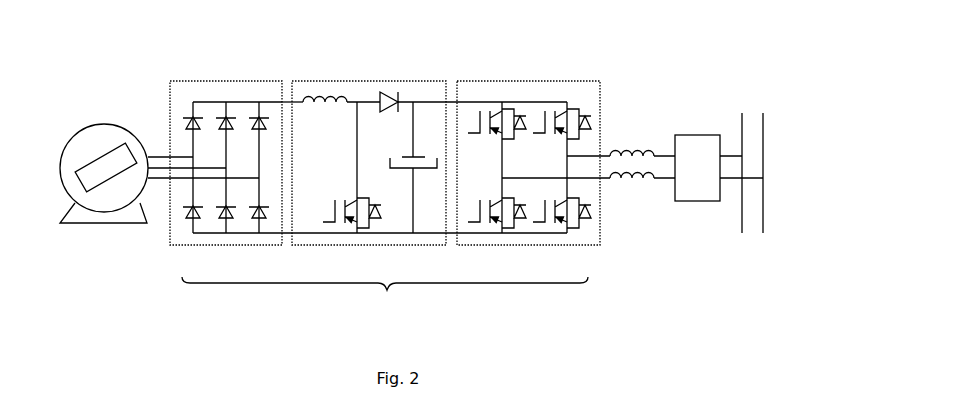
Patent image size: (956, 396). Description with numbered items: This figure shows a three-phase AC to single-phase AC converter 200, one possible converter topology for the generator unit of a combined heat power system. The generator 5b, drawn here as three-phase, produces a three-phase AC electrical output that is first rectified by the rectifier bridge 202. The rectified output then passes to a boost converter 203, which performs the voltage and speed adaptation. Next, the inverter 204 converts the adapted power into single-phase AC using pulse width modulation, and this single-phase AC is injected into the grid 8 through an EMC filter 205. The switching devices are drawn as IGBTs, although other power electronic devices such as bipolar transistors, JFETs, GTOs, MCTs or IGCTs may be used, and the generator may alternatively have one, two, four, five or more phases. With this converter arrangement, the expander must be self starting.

The generator 5b is at (159, 153).
The three-phase AC to single-phase AC converter 200 is at (390, 183).
The rectifier bridge 202 is at (226, 147).
The boost converter 203 is at (364, 147).
The inverter 204 is at (528, 141).
The EMC filter 205 is at (719, 168).
The grid 8 is at (753, 153).